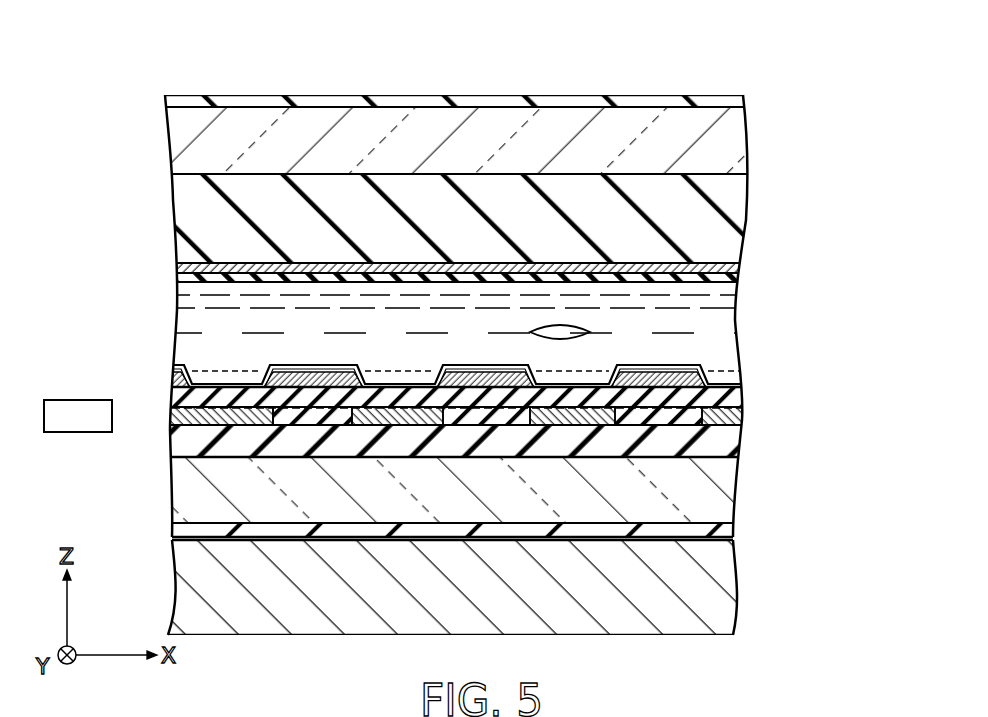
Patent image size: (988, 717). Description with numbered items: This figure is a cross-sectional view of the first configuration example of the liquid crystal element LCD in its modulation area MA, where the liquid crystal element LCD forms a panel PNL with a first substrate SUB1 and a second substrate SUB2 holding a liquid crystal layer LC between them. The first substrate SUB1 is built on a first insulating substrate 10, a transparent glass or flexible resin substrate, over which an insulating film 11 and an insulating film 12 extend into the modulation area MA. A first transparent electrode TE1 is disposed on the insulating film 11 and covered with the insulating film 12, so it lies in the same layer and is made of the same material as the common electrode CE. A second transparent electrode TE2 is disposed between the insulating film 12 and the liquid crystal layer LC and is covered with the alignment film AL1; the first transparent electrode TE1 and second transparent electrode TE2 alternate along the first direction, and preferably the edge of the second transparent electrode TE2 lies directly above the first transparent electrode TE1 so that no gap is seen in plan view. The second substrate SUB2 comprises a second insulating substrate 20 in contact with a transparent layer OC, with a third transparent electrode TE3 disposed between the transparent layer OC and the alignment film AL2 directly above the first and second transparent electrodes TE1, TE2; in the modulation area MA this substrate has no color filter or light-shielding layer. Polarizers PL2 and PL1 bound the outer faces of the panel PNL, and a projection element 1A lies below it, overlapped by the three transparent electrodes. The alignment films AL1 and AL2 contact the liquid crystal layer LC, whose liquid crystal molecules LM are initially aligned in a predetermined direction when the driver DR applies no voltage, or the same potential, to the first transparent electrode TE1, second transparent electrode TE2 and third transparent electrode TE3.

The liquid crystal element LCD is at (479, 344).
The display panel PNL is at (464, 298).
The first substrate SUB1 is at (480, 434).
The second substrate SUB2 is at (486, 188).
The first insulating substrate 10 is at (725, 493).
The insulating film 11 is at (738, 440).
The common electrode CE is at (457, 397).
The insulating film 12 is at (738, 397).
The first transparent electrode TE1 is at (198, 414).
The second transparent electrode TE2 is at (278, 380).
The alignment film AL1 is at (735, 384).
The liquid crystal layer LC is at (476, 196).
The liquid crystal molecules LM is at (592, 330).
The alignment film AL2 is at (715, 280).
The third transparent electrode TE3 is at (180, 270).
The transparent layer OC is at (728, 249).
The second insulating substrate 20 is at (725, 133).
The second polarizer PL2 is at (732, 103).
The first polarizer PL1 is at (725, 532).
The projection element 1A is at (735, 598).
The modulation area MA is at (513, 304).
The driver DR is at (158, 416).